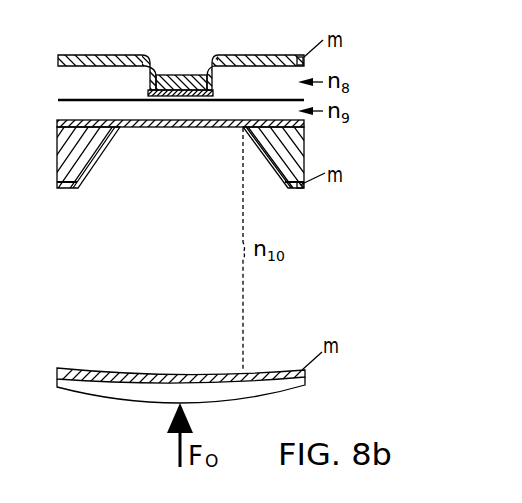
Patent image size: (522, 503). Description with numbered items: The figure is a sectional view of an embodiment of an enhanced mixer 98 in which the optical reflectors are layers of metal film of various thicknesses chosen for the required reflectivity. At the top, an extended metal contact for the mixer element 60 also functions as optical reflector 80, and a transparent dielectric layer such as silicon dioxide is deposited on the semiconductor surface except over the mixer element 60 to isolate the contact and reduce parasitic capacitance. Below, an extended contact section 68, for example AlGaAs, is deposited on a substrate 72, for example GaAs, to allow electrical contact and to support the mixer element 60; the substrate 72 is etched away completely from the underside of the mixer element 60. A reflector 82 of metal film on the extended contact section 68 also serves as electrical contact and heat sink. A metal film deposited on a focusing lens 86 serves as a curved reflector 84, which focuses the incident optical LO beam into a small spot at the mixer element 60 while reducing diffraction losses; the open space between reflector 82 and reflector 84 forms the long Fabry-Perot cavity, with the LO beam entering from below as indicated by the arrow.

The enhanced mixer 98 is at (47, 54).
The optical reflector 80 is at (55, 57).
The mixer element 60 is at (174, 64).
The extended contact section 68 is at (62, 110).
The substrate 72 is at (55, 120).
The reflector 82 is at (120, 137).
The reflector 84 is at (96, 361).
The focusing lens 86 is at (75, 382).